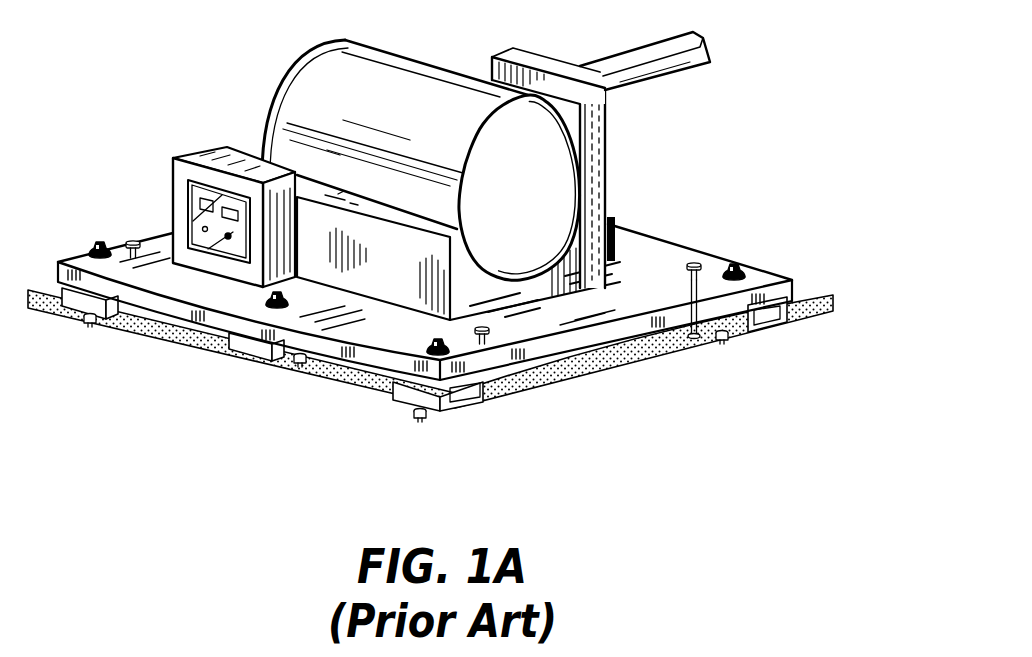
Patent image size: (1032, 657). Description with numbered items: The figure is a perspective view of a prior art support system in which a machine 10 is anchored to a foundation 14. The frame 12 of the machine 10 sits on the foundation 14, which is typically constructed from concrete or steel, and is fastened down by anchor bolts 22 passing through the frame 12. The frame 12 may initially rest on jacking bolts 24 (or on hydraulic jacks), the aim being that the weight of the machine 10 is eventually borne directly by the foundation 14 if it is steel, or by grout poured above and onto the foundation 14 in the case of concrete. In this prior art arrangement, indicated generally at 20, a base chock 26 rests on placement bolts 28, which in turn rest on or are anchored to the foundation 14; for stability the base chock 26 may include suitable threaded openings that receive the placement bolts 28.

The machine 10 is at (392, 55).
The frame 12 is at (640, 240).
The foundation 14 is at (840, 310).
The leveling mount assembly 20 is at (520, 457).
The anchor bolts 22 is at (737, 266).
The jacking bolts 24 is at (691, 264).
The base chock 26 is at (80, 306).
The placement bolts 28 is at (473, 418).